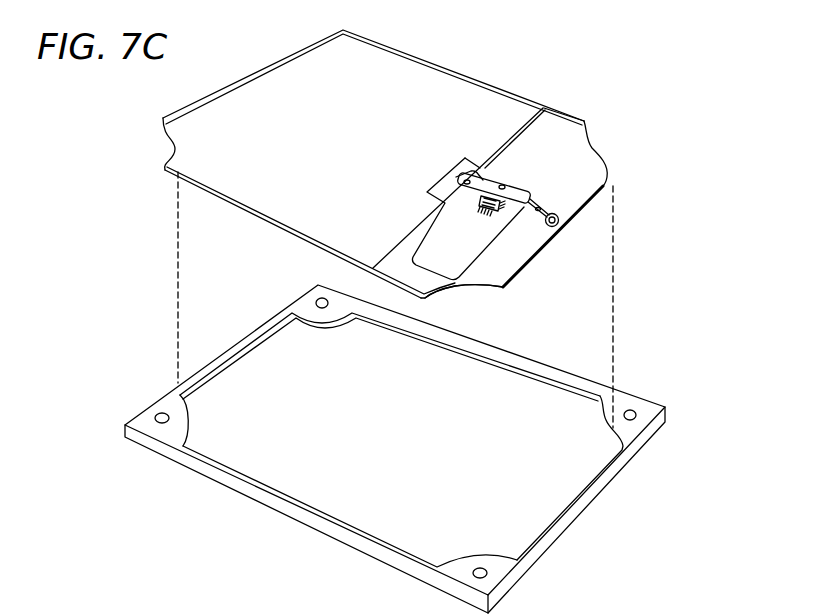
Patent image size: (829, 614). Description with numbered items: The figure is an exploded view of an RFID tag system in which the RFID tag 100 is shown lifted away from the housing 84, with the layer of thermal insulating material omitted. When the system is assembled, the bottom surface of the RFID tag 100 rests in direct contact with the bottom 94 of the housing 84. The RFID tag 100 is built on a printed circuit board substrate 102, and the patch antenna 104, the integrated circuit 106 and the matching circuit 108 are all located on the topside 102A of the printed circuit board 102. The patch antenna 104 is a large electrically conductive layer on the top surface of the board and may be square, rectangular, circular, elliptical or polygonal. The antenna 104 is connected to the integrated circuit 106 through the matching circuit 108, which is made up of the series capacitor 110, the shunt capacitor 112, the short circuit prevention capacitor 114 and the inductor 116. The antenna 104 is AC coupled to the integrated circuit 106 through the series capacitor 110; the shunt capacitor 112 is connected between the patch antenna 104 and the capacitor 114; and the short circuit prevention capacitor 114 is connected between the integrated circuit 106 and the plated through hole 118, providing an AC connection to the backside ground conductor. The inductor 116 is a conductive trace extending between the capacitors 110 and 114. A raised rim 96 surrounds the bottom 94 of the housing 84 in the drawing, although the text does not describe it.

The housing 84 is at (607, 499).
The bottom 94 is at (550, 408).
The sealing rim 96 is at (518, 385).
The RFID tag 100 is at (275, 235).
The printed circuit board substrate 102 is at (524, 289).
The topside 102A is at (542, 230).
The patch antenna 104 is at (270, 80).
The integrated circuit 106 is at (512, 247).
The matching circuit 108 is at (533, 195).
The series capacitor 110 is at (544, 108).
The shunt capacitor 112 is at (534, 181).
The short circuit prevention capacitor 114 is at (546, 211).
The inductor 116 is at (452, 282).
The plated through hole 118 is at (560, 217).